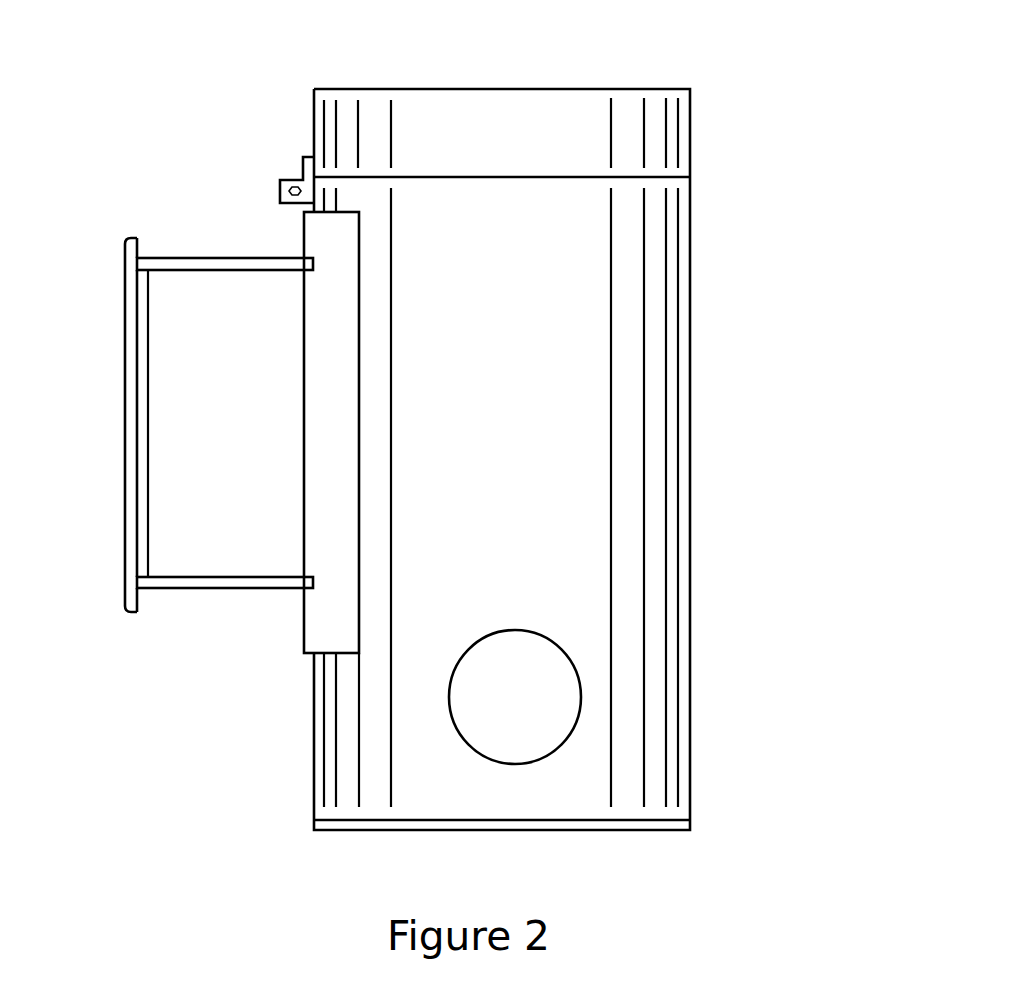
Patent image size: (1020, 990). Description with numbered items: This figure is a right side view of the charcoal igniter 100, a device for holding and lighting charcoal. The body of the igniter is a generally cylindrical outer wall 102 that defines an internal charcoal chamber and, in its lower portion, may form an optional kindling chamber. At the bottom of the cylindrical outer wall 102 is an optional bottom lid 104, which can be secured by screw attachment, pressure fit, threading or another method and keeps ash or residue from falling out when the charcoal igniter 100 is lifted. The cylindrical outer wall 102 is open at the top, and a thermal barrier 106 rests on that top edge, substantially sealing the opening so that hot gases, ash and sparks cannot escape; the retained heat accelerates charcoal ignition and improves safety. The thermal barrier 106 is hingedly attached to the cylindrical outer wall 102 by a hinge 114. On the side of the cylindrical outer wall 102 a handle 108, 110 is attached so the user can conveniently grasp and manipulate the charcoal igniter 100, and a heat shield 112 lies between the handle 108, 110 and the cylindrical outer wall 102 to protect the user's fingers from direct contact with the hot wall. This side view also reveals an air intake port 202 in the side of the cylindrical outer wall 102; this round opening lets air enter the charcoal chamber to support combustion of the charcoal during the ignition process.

The charcoal igniter 100 is at (780, 97).
The cylindrical outer wall 102 is at (690, 418).
The bottom lid 104 is at (580, 830).
The thermal barrier 106 is at (500, 112).
The handle 108 is at (125, 447).
The handle 110 is at (247, 258).
The heat shield 112 is at (325, 445).
The hinge 114 is at (282, 188).
The air intake port 202 is at (525, 640).